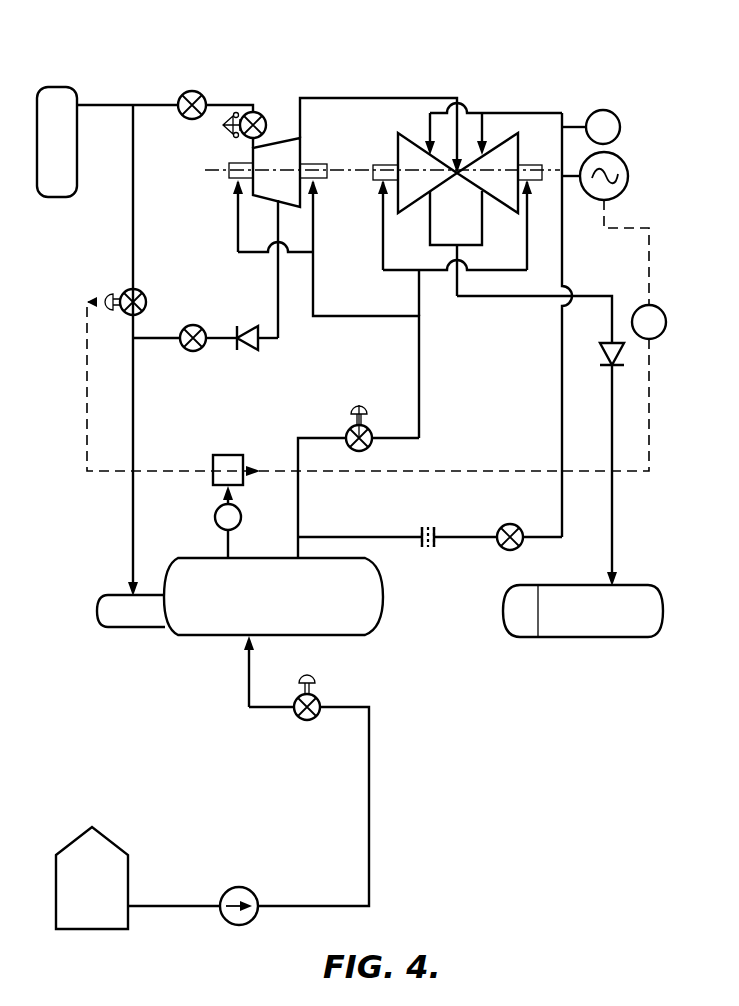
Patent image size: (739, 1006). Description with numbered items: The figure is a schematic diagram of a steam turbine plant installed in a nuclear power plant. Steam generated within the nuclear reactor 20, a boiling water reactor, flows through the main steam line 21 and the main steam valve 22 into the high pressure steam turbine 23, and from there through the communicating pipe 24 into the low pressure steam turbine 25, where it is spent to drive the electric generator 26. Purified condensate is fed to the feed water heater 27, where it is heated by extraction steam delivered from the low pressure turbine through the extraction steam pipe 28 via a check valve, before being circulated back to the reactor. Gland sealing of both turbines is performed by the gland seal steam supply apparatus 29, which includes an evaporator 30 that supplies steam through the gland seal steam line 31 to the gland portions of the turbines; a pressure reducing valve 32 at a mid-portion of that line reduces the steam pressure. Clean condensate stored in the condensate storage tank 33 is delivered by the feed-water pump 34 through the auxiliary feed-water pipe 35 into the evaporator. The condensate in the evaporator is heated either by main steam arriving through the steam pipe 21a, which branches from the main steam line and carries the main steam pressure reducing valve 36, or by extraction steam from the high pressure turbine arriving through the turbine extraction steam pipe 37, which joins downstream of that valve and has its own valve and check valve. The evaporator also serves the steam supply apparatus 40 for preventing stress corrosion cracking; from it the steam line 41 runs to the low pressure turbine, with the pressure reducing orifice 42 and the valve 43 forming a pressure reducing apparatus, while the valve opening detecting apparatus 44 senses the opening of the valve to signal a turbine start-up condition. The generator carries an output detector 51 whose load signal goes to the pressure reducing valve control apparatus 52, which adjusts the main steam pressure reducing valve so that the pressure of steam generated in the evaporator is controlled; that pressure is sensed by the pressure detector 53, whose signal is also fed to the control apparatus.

The nuclear reactor 20 is at (60, 197).
The main steam line 21 is at (118, 105).
The steam pipe 21a is at (133, 222).
The main steam valve 22 is at (192, 91).
The high pressure steam turbine 23 is at (277, 138).
The communicating pipe 24 is at (376, 98).
The low pressure steam turbine 25 is at (500, 138).
The electric generator 26 is at (627, 165).
The feed water heater 27 is at (620, 637).
The extraction steam pipe 28 is at (612, 452).
The gland seal steam supply apparatus 29 is at (342, 411).
The evaporator 30 is at (345, 636).
The gland seal steam line 31 is at (419, 376).
The pressure reducing valve 32 is at (372, 430).
The condensate storage tank 33 is at (112, 842).
The feed-water pump 34 is at (247, 887).
The auxiliary feed-water pipe 35 is at (369, 800).
The main steam pressure reducing valve 36 is at (143, 292).
The turbine extraction steam pipe 37 is at (160, 338).
The steam supply apparatus 40 is at (482, 564).
The steam line 41 is at (562, 355).
The pressure reducing orifice 42 is at (425, 526).
The valve 43 is at (510, 524).
The valve opening detecting apparatus 44 is at (603, 110).
The output detector 51 is at (660, 310).
The pressure reducing valve control apparatus 52 is at (228, 455).
The pressure detector 53 is at (215, 517).